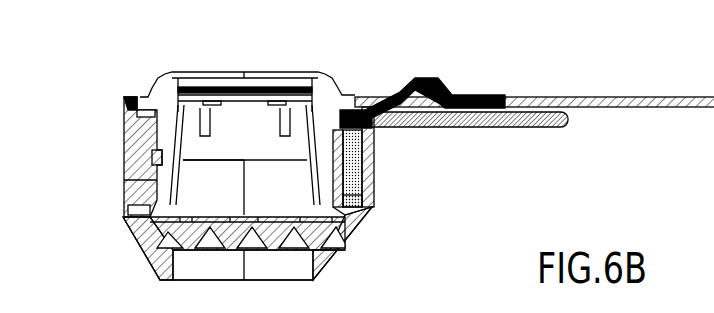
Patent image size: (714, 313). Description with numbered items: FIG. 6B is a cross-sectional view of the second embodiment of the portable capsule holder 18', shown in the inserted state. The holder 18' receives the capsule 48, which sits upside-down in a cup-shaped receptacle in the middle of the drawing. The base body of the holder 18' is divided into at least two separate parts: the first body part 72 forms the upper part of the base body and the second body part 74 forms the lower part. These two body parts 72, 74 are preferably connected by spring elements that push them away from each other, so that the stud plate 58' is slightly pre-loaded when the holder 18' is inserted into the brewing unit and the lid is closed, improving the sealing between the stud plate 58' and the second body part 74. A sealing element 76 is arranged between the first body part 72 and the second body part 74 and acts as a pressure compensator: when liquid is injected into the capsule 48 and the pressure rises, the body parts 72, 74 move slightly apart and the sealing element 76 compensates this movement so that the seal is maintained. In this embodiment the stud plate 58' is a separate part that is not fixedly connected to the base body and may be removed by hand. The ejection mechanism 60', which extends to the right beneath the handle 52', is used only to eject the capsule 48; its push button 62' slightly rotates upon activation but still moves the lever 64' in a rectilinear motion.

The portable capsule holder 18' is at (248, 176).
The first body part 72 is at (126, 100).
The sealing element 76 is at (153, 155).
The capsule 48 is at (206, 170).
The second body part 74 is at (138, 214).
The push button 62' is at (422, 79).
The ejection mechanism 60' is at (466, 85).
The handle 52' is at (534, 83).
The lever 64' is at (391, 208).
The stud plate 58' is at (364, 248).